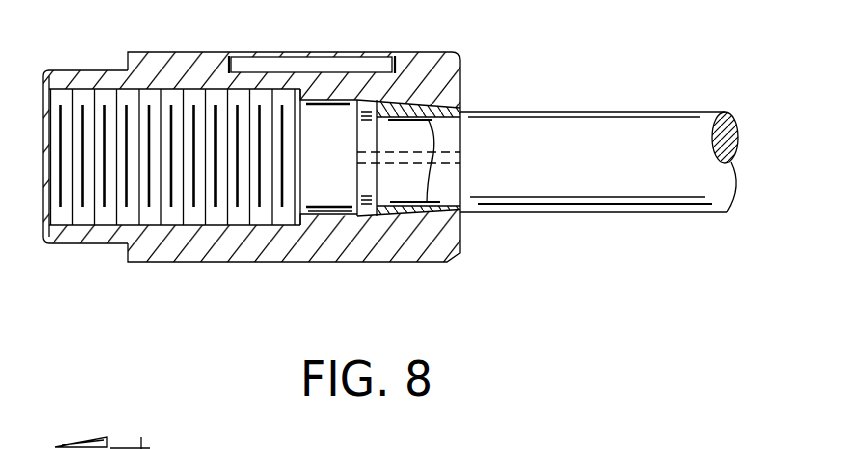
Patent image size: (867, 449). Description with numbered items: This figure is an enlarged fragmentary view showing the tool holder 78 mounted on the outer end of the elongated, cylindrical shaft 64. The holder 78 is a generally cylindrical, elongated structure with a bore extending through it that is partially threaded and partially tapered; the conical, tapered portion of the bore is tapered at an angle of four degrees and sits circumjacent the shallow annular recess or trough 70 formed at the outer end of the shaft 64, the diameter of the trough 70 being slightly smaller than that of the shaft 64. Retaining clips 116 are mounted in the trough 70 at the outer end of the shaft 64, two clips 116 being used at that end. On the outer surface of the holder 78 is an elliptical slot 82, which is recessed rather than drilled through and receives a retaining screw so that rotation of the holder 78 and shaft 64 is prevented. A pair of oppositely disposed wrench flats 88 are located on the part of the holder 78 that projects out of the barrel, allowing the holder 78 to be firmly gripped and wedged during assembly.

The shaft 64 is at (593, 213).
The trough 70 is at (425, 148).
The tool holder 78 is at (303, 263).
The elliptical slot 82 is at (302, 64).
The wrench flats 88 is at (90, 68).
The retaining clips 116 is at (443, 192).